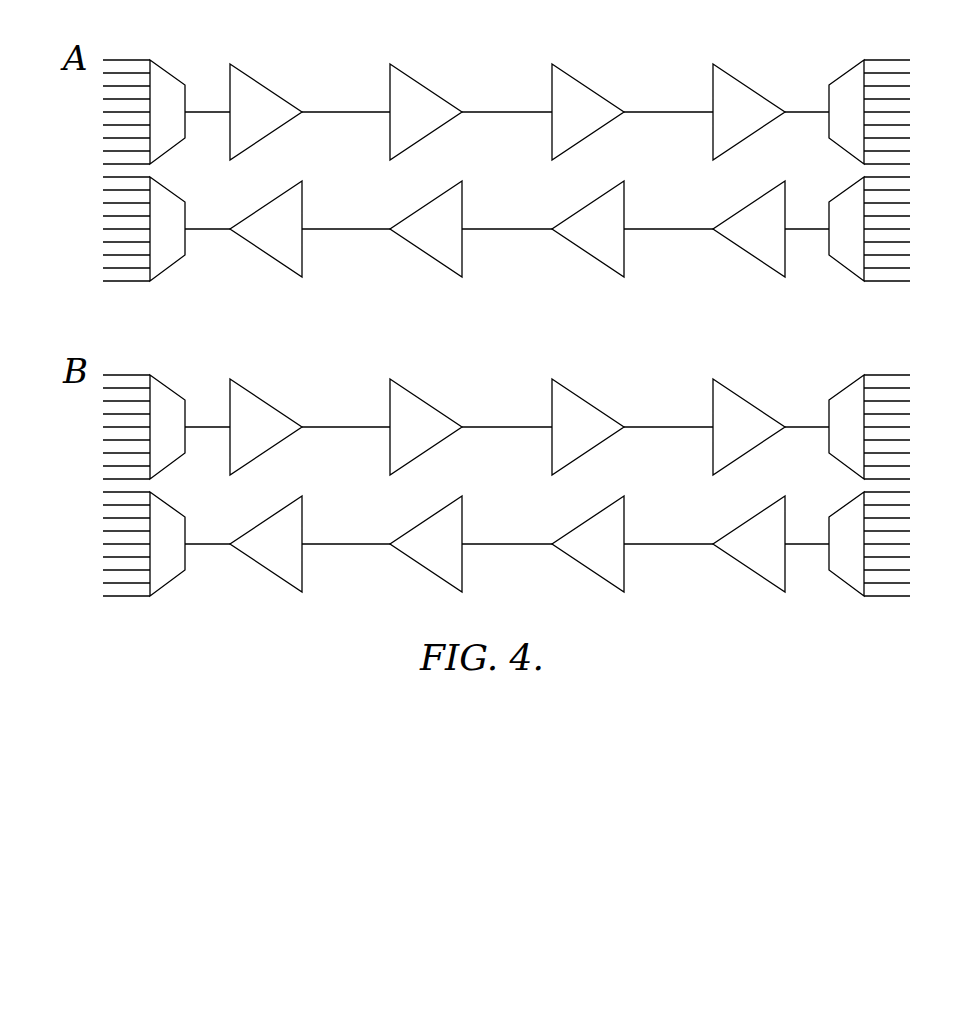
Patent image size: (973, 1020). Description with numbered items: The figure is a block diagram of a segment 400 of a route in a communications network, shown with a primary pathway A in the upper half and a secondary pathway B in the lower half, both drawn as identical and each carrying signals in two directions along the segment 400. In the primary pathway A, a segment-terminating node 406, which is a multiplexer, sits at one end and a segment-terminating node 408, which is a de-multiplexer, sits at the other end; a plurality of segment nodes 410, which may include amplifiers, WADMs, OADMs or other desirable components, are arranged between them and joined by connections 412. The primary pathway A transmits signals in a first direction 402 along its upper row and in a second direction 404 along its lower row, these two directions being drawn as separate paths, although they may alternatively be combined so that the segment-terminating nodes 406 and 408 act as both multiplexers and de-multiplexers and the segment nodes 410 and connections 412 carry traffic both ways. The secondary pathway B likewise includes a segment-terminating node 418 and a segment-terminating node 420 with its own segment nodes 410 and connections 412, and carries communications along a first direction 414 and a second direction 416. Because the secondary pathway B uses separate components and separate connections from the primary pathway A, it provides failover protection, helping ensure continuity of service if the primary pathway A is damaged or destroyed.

The segment 400 is at (548, 60).
The first direction 402 is at (92, 137).
The second direction 404 is at (92, 255).
The segment-terminating node 406 is at (168, 73).
The segment-terminating node 408 is at (848, 72).
The segment node 410 is at (428, 85).
The connection 412 is at (508, 110).
The first direction 414 is at (92, 450).
The second direction 416 is at (92, 566).
The segment-terminating node 418 is at (168, 388).
The segment-terminating node 420 is at (848, 386).